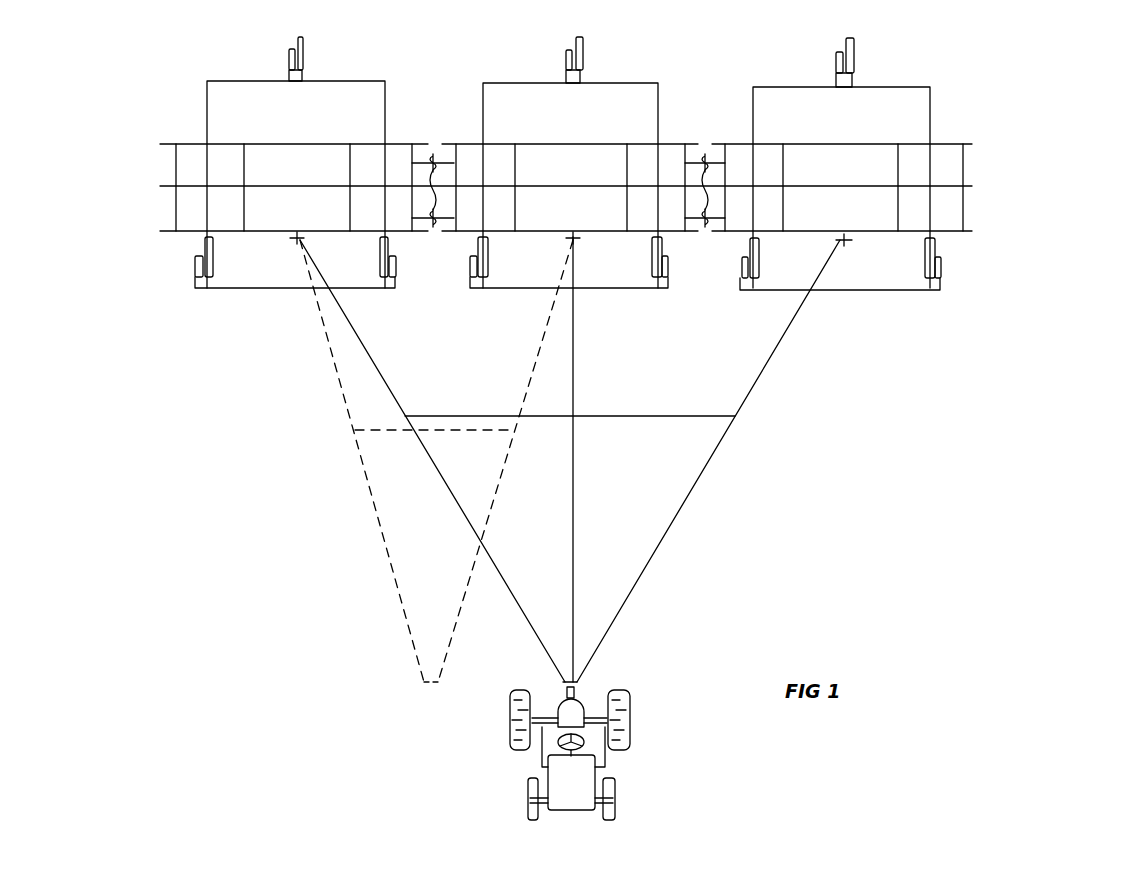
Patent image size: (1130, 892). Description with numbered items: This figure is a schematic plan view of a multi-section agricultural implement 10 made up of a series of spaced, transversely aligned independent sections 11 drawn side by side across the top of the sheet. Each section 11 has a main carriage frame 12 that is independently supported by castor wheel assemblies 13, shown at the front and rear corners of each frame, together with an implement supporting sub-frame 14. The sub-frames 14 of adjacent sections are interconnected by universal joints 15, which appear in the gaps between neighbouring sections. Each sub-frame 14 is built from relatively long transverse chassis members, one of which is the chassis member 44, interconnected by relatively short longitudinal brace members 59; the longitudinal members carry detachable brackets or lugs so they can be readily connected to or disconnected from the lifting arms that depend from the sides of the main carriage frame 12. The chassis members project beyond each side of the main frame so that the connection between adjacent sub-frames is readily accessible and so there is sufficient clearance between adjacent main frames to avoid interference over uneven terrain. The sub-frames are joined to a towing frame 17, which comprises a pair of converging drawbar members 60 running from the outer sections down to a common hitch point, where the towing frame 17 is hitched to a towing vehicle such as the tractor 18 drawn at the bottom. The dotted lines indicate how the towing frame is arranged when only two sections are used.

The multi-section agricultural implement 10 is at (1002, 122).
The independent section 11 is at (567, 166).
The main carriage frame 12 is at (385, 117).
The castor wheel assemblies 13 is at (305, 45).
The implement supporting sub-frame 14 is at (318, 144).
The universal joints 15 is at (568, 190).
The towing frame 17 is at (680, 513).
The tractor 18 is at (510, 698).
The transverse chassis member 44 is at (252, 144).
The longitudinal brace members 59 is at (176, 172).
The converging drawbar members 60 is at (386, 366).